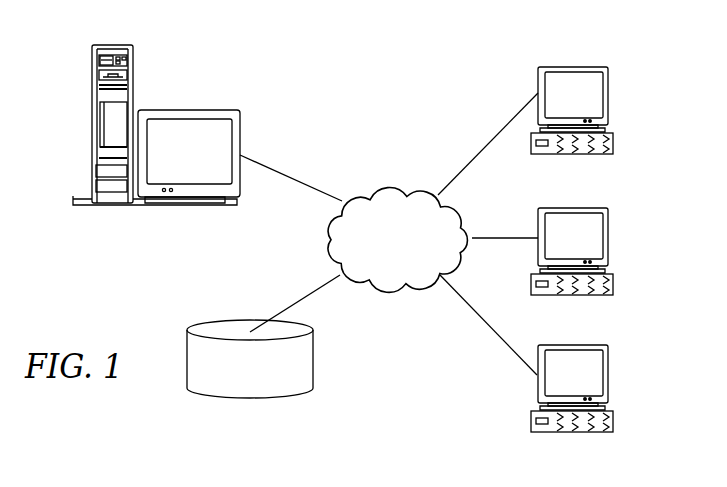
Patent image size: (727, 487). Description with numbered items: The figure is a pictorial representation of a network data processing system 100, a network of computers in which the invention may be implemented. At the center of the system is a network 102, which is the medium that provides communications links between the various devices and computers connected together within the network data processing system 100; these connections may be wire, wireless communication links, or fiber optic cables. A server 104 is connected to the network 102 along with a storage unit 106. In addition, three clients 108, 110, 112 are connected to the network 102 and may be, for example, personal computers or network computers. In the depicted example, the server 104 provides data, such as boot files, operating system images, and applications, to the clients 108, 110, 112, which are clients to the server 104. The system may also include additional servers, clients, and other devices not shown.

The network data processing system 100 is at (450, 70).
The network 102 is at (368, 190).
The server 104 is at (92, 124).
The storage unit 106 is at (232, 401).
The client 108 is at (608, 97).
The client 110 is at (608, 238).
The client 112 is at (608, 375).